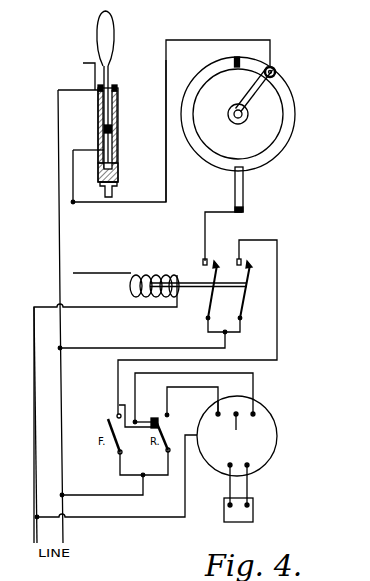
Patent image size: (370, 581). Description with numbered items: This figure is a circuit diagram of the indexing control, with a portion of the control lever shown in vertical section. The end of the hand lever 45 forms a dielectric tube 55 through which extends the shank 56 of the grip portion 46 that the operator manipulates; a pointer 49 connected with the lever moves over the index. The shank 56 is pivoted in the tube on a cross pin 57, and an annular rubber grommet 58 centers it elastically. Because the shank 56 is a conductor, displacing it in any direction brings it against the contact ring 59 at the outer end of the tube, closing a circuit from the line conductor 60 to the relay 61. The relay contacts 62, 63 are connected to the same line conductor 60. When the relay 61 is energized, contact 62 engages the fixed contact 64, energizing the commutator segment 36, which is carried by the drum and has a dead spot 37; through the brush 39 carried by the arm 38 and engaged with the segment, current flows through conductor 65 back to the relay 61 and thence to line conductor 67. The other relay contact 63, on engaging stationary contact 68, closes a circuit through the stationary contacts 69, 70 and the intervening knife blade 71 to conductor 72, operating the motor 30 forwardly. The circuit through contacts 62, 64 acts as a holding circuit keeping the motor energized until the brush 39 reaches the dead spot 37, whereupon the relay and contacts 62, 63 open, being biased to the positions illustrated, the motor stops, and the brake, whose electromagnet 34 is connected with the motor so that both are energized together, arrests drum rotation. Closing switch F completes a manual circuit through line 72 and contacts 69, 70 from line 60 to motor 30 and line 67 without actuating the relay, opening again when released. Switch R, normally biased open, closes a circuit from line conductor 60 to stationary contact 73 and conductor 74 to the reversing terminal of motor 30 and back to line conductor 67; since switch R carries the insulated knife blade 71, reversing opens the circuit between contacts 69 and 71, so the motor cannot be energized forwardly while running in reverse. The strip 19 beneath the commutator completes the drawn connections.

The contact strip 19 is at (243, 192).
The motor 30 is at (268, 450).
The electromagnet 34 is at (243, 516).
The commutator segment 36 is at (287, 136).
The dead spot 37 is at (235, 59).
The arm 38 is at (250, 96).
The brush 39 is at (276, 71).
The hand lever 45 is at (112, 190).
The grip portion 46 is at (109, 34).
The pointer 49 is at (86, 63).
The dielectric tube 55 is at (118, 120).
The shank 56 is at (109, 76).
The cross pin 57 is at (118, 164).
The rubber grommet 58 is at (113, 133).
The contact ring 59 is at (118, 89).
The line conductor 60 is at (63, 528).
The relay 61 is at (155, 272).
The relay contact 62 is at (212, 297).
The relay contact 63 is at (244, 297).
The fixed contact 64 is at (204, 262).
The conductor 65 is at (166, 172).
The line conductor 67 is at (37, 530).
The stationary contact 68 is at (236, 262).
The stationary contact 69 is at (144, 432).
The stationary contact 70 is at (141, 420).
The knife blade 71 is at (153, 419).
The conductor 72 is at (254, 386).
The stationary contact 73 is at (169, 416).
The conductor 74 is at (223, 388).